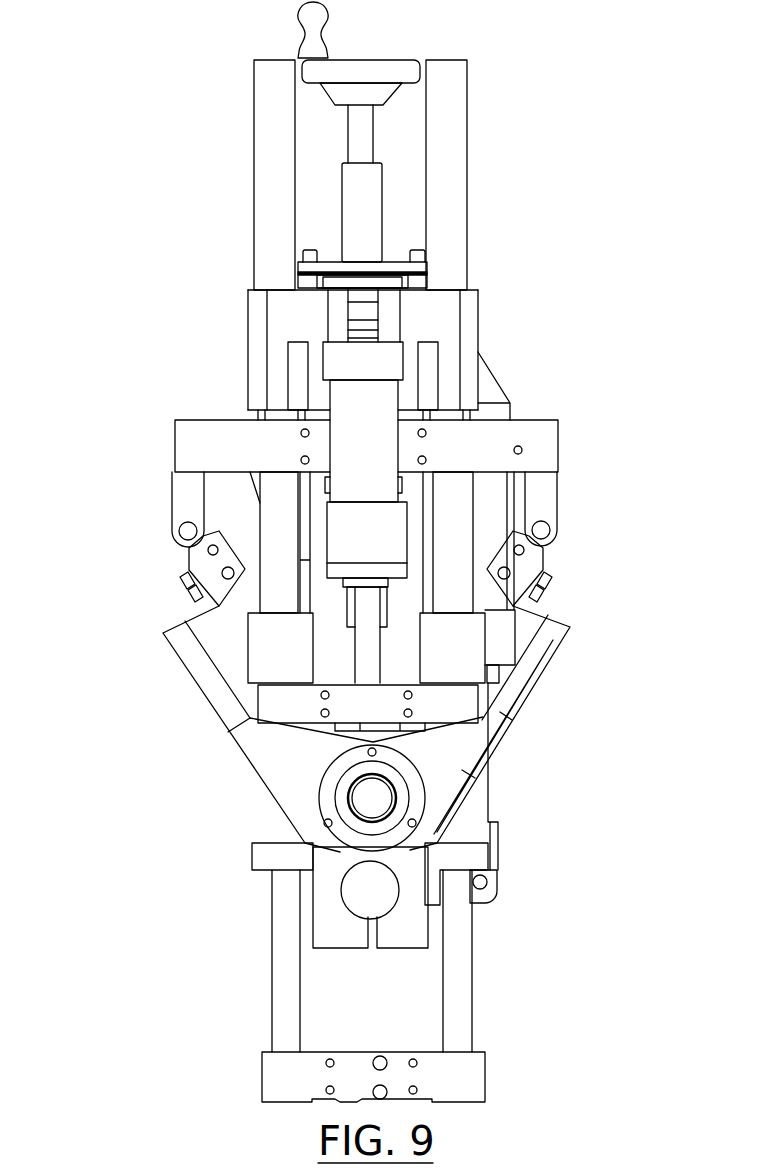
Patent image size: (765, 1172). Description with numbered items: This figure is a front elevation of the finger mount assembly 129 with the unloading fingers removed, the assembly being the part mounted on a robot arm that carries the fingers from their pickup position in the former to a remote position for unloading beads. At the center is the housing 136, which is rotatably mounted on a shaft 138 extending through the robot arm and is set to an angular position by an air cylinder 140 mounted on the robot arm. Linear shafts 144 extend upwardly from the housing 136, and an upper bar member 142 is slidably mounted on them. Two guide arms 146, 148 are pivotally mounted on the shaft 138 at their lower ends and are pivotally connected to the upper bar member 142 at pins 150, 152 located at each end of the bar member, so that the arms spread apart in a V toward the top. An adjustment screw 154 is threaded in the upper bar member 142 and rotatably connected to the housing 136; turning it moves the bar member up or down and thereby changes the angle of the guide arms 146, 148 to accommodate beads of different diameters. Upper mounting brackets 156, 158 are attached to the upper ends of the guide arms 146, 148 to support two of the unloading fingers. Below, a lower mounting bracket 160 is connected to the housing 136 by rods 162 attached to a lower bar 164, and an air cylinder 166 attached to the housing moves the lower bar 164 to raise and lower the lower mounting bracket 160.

The finger mount assembly 129 is at (560, 437).
The housing 136 is at (492, 808).
The shaft 138 is at (346, 798).
The air cylinder 140 is at (500, 863).
The upper bar member 142 is at (496, 459).
The linear shafts 144 is at (271, 176).
The guide arm 146 is at (545, 660).
The guide arm 148 is at (187, 657).
The pin 150 is at (545, 525).
The pin 152 is at (179, 526).
The adjustment screw 154 is at (367, 212).
The upper mounting bracket 156 is at (520, 563).
The upper mounting bracket 158 is at (196, 555).
The lower mounting bracket 160 is at (472, 1088).
The rods 162 is at (278, 988).
The lower bar 164 is at (314, 722).
The air cylinder 166 is at (386, 471).